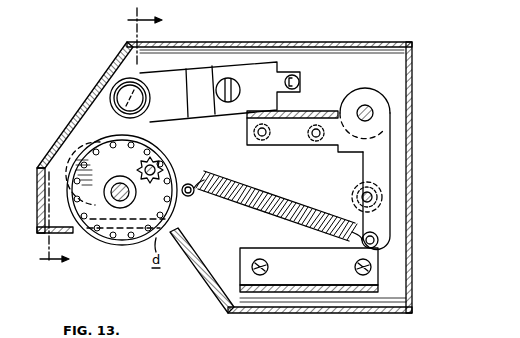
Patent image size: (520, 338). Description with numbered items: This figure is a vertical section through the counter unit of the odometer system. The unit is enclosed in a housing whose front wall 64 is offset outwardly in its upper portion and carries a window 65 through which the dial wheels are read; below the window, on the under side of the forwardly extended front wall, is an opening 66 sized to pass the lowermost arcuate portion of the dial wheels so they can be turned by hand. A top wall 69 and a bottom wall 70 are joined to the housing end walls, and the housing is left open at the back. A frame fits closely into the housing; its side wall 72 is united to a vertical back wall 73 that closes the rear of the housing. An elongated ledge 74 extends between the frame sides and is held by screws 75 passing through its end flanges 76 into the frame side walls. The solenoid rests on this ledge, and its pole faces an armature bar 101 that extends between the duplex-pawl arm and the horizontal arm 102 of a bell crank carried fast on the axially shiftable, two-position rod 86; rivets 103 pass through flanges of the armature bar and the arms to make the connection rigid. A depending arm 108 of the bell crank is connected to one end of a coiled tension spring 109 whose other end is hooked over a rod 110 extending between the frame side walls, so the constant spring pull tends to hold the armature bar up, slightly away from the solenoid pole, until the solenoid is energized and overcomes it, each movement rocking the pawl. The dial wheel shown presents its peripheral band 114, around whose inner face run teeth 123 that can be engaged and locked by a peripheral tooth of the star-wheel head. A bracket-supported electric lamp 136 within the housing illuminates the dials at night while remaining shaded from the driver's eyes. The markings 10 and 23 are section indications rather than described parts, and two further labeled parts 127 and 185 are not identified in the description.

The section line 10 is at (111, 137).
The direction of movement arrow 23 is at (178, 140).
The front wall 64 is at (42, 220).
The window 65 is at (56, 147).
The opening 66 is at (63, 245).
The top wall 69 is at (352, 42).
The bottom wall 70 is at (288, 312).
The side wall 72 is at (306, 53).
The back wall 73 is at (413, 298).
The ledge 74 is at (327, 292).
The screws 75 is at (268, 267).
The end flanges 76 is at (285, 247).
The rod 86 is at (365, 107).
The armature bar 101 is at (308, 114).
The horizontal arm 102 is at (262, 140).
The rivets 103 is at (311, 140).
The depending arm 108 is at (362, 202).
The coiled tension spring 109 is at (315, 199).
The rod 110 is at (206, 177).
The peripheral band 114 is at (143, 146).
The teeth 123 is at (130, 244).
The spring anchor 127 is at (173, 208).
The electric lamp 136 is at (112, 93).
The hub 185 is at (113, 178).